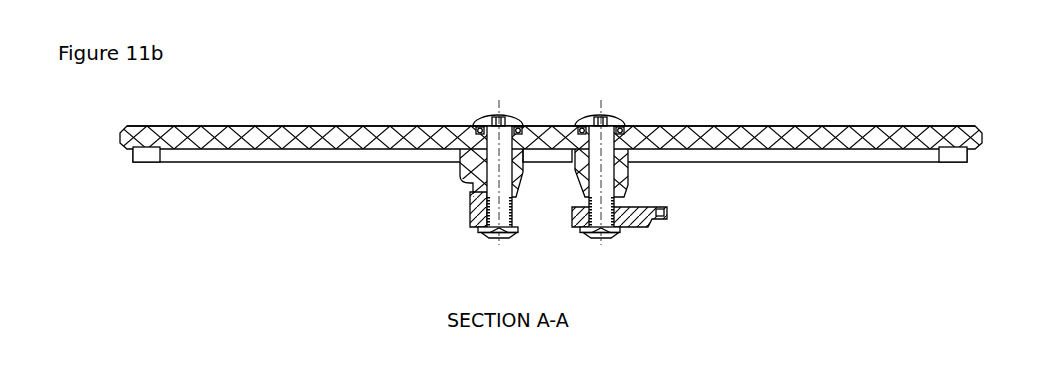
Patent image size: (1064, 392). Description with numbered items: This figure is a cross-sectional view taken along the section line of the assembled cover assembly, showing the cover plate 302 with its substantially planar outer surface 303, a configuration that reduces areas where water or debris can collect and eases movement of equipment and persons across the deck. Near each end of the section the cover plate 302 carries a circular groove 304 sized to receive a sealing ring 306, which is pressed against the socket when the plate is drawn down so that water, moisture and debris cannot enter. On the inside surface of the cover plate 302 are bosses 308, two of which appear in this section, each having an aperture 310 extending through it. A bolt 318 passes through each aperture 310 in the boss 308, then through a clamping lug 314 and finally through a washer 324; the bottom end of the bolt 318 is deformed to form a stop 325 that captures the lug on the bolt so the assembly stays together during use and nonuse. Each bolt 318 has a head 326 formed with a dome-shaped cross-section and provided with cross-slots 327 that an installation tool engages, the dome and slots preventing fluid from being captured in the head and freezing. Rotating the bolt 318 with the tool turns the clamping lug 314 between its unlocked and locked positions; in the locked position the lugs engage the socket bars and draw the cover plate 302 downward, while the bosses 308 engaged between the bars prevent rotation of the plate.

The cover plate 302 is at (828, 117).
The outer surface 303 is at (258, 126).
The circular groove 304 is at (968, 161).
The sealing ring 306 is at (953, 163).
The boss 308 is at (468, 183).
The aperture 310 is at (598, 165).
The clamping lug 314 is at (470, 218).
The bolt 318 is at (522, 116).
The washer 324 is at (620, 233).
The stop 325 is at (603, 240).
The head 326 is at (483, 120).
The cross-slots 327 is at (505, 117).